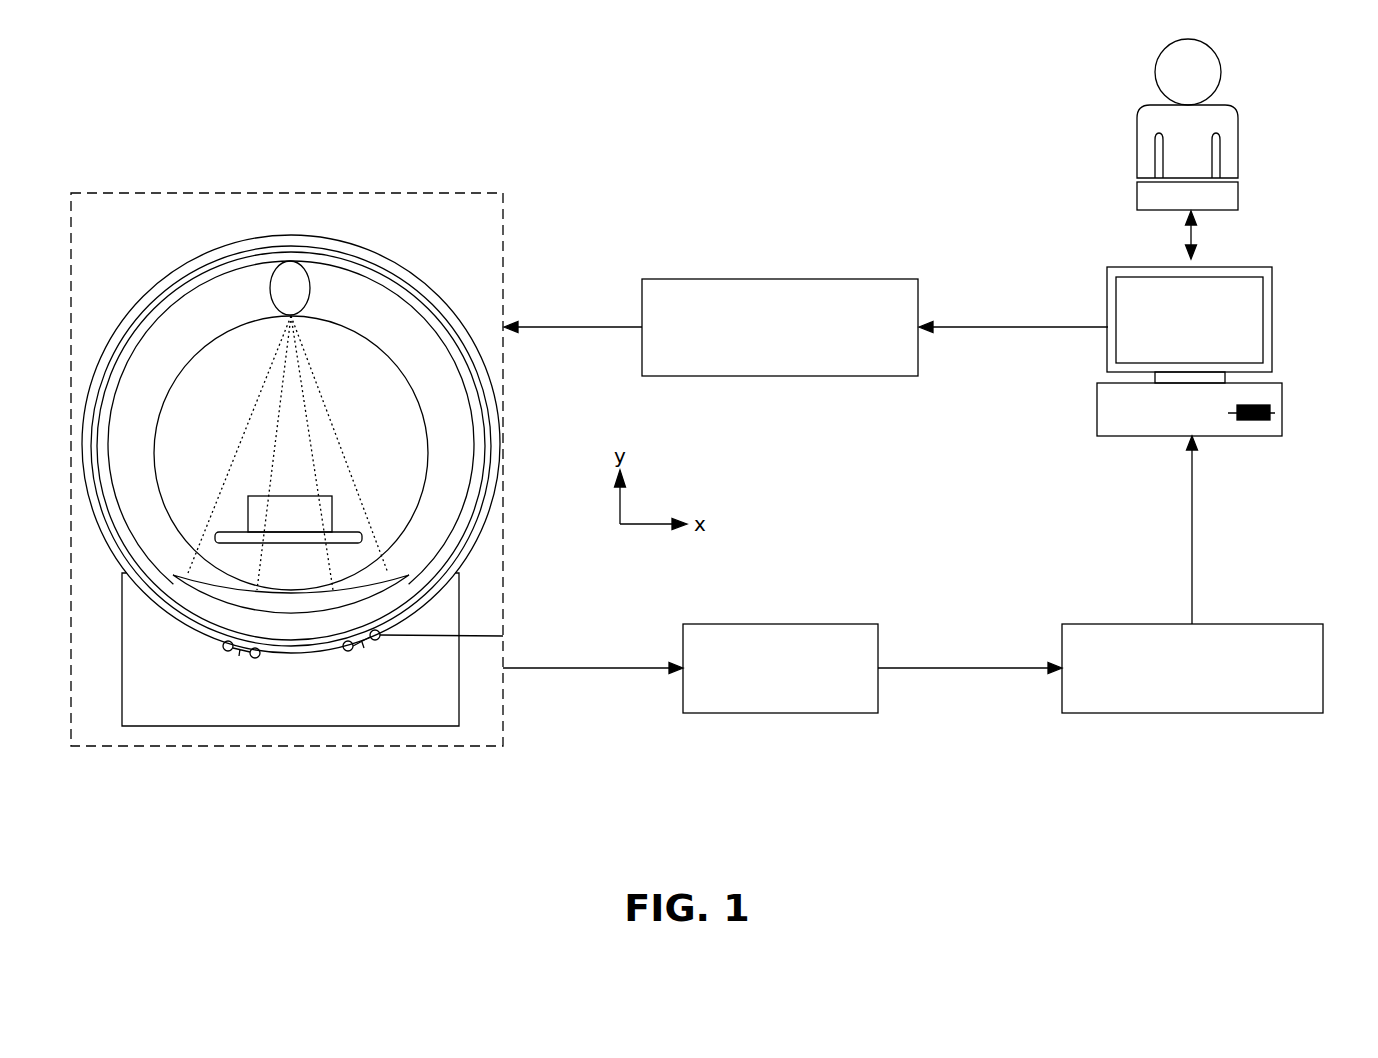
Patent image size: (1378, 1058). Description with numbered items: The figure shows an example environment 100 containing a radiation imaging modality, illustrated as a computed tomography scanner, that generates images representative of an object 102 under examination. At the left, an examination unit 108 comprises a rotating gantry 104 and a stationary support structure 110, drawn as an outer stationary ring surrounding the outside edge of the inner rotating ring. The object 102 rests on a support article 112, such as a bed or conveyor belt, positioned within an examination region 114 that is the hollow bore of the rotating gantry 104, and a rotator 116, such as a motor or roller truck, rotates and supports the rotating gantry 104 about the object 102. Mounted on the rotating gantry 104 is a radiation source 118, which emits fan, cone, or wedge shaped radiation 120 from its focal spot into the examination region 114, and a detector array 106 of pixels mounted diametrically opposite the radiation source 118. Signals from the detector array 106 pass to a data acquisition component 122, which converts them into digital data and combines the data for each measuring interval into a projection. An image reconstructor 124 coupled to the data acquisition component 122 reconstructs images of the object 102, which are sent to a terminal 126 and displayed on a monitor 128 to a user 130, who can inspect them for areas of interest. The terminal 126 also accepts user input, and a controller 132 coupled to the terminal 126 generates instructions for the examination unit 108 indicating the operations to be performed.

The example environment 100 is at (163, 104).
The object 102 is at (288, 495).
The rotating gantry 104 is at (206, 263).
The detector array 106 is at (208, 603).
The examination unit 108 is at (503, 193).
The support structure 110 is at (401, 265).
The support article 112 is at (225, 530).
The examination region 114 is at (274, 446).
The rotator 116 is at (503, 636).
The radiation source 118 is at (308, 287).
The radiation 120 is at (252, 407).
The data acquisition component 122 is at (780, 713).
The image reconstructor 124 is at (1285, 624).
The terminal 126 is at (1282, 383).
The monitor 128 is at (1272, 267).
The user 130 is at (1238, 120).
The controller 132 is at (782, 279).